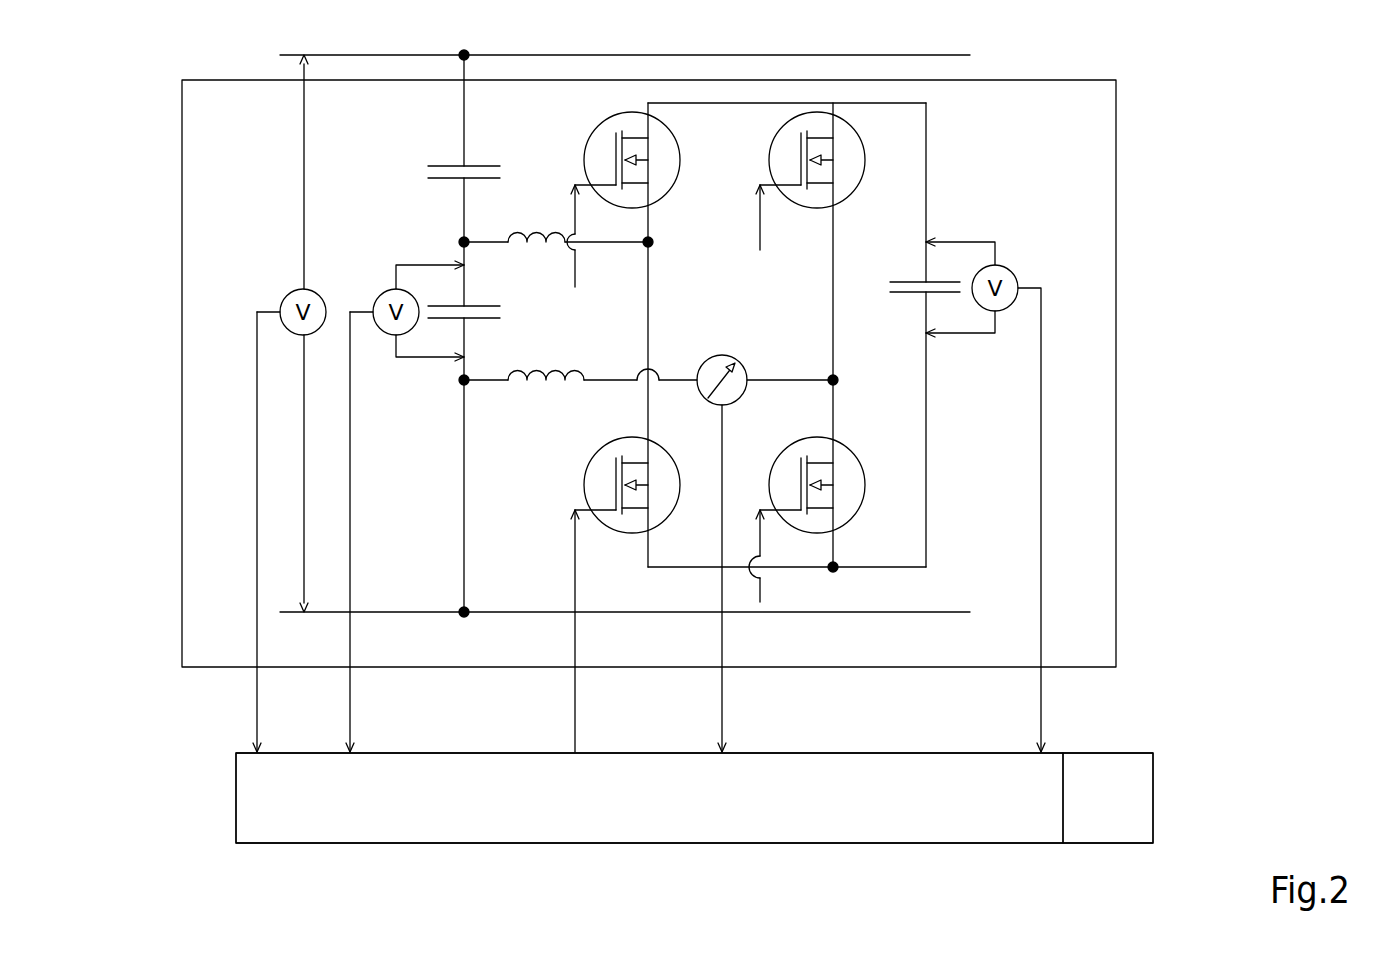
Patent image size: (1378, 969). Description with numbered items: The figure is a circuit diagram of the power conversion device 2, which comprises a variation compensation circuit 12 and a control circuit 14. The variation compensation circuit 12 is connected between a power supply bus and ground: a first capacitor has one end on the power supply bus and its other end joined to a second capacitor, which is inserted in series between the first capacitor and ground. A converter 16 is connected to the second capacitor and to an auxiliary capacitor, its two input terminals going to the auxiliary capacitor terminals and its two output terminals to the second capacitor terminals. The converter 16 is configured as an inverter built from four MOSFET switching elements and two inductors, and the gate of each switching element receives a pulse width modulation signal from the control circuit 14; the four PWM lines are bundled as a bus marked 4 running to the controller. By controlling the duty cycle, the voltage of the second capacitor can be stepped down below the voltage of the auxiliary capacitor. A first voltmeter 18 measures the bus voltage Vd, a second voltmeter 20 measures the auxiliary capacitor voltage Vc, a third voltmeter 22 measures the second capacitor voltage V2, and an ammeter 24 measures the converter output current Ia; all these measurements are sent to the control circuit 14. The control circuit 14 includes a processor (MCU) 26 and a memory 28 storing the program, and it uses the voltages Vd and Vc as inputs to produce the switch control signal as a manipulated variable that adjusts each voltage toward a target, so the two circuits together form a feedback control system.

The power conversion device 2 is at (709, 15).
The PWM signal lines 4 is at (565, 715).
The variation compensation circuit 12 is at (1123, 202).
The control circuit 14 is at (910, 848).
The converter 16 is at (935, 160).
The first voltmeter 18 is at (284, 291).
The second voltmeter 20 is at (1013, 270).
The third voltmeter 22 is at (378, 293).
The ammeter 24 is at (741, 360).
The processor (MCU) 26 is at (708, 845).
The memory 28 is at (1090, 845).